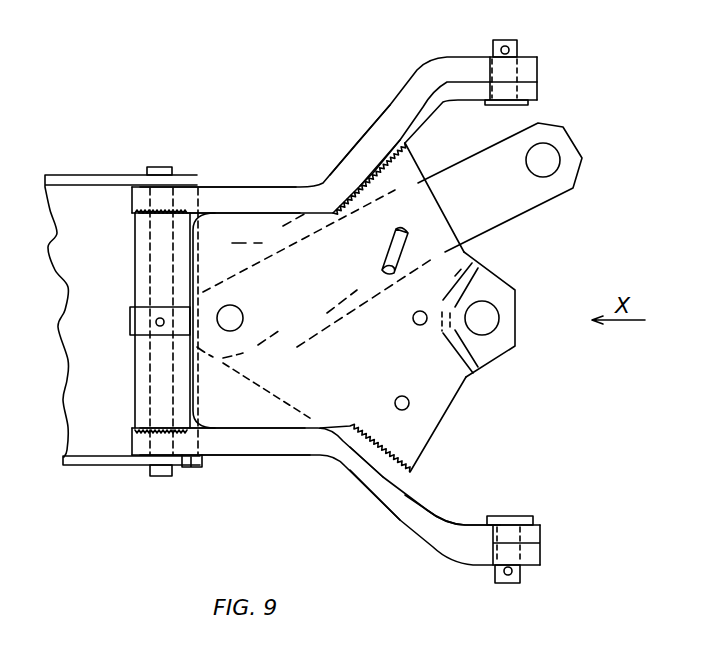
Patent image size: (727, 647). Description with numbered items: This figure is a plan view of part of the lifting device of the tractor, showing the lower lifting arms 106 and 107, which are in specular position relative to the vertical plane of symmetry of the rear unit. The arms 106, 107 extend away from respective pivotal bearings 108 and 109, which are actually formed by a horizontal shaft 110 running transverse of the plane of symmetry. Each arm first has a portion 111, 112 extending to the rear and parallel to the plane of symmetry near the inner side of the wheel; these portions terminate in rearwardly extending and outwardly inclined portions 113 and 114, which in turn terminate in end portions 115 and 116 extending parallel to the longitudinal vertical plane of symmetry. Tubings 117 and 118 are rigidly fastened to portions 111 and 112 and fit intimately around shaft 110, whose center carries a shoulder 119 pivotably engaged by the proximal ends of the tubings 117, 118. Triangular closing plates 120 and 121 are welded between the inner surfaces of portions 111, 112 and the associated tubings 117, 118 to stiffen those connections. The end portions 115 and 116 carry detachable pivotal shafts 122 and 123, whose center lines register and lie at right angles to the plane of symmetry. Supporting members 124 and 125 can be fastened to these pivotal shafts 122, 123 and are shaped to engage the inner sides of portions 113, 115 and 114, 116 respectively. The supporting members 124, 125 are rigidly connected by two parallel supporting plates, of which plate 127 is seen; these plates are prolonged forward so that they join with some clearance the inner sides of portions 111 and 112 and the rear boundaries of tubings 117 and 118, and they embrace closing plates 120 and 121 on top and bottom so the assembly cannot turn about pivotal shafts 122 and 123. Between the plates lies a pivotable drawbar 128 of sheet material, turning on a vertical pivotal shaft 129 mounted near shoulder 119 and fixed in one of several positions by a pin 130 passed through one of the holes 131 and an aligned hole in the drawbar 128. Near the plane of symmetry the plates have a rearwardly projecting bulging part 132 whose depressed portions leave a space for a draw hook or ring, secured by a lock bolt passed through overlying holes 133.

The lower lifting arm 106 is at (330, 474).
The lower lifting arm 107 is at (308, 167).
The pivotal bearing 108 is at (148, 187).
The pivotal bearing 109 is at (193, 466).
The horizontal shaft 110 is at (158, 476).
The portion of lower lifting arm 111 is at (280, 444).
The portion of lower lifting arm 112 is at (250, 176).
The outwardly inclined portion 113 is at (382, 488).
The outwardly inclined portion 114 is at (357, 135).
The end portion 115 is at (486, 557).
The end portion 116 is at (471, 56).
The tubing 117 is at (140, 377).
The tubing 118 is at (138, 243).
The shoulder 119 is at (130, 322).
The triangular closing plate 120 is at (279, 407).
The triangular closing plate 121 is at (272, 233).
The pivotal shaft 122 is at (497, 583).
The pivotal shaft 123 is at (512, 44).
The supporting member 124 is at (450, 507).
The supporting member 125 is at (438, 103).
The supporting plate 127 is at (418, 412).
The drawbar 128 is at (543, 192).
The vertical pivotal shaft 129 is at (232, 317).
The pin 130 is at (390, 246).
The holes 131 is at (411, 318).
The bulging part 132 is at (511, 356).
The holes 133 is at (484, 313).